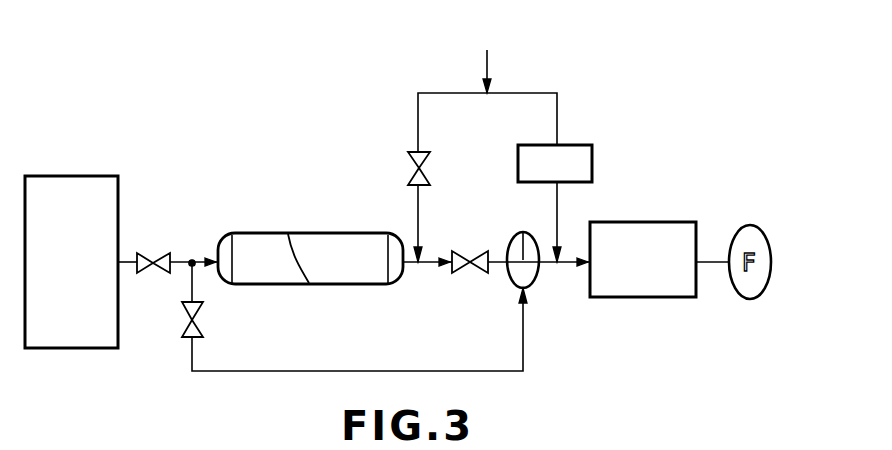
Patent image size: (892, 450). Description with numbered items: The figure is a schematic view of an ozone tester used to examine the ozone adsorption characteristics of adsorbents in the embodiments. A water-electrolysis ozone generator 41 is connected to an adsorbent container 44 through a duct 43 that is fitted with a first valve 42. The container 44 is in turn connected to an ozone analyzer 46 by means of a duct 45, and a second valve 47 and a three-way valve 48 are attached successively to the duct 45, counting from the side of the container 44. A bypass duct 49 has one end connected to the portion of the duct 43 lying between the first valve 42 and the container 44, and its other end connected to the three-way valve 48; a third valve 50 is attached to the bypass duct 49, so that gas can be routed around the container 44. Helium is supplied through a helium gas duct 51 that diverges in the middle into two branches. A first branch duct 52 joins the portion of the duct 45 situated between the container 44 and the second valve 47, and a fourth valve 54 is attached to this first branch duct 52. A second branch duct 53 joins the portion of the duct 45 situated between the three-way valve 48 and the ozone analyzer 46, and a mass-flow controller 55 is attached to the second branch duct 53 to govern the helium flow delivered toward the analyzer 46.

The water-electrolysis ozone generator 41 is at (104, 178).
The first valve 42 is at (158, 256).
The duct 43 is at (181, 262).
The adsorbent container 44 is at (305, 237).
The duct 45 is at (425, 266).
The ozone analyzer 46 is at (668, 226).
The second valve 47 is at (477, 273).
The three-way valve 48 is at (536, 283).
The bypass duct 49 is at (272, 372).
The third valve 50 is at (203, 325).
The helium gas duct 51 is at (488, 62).
The first branch duct 52 is at (419, 121).
The second branch duct 53 is at (557, 116).
The fourth valve 54 is at (407, 169).
The mass-flow controller 55 is at (592, 165).